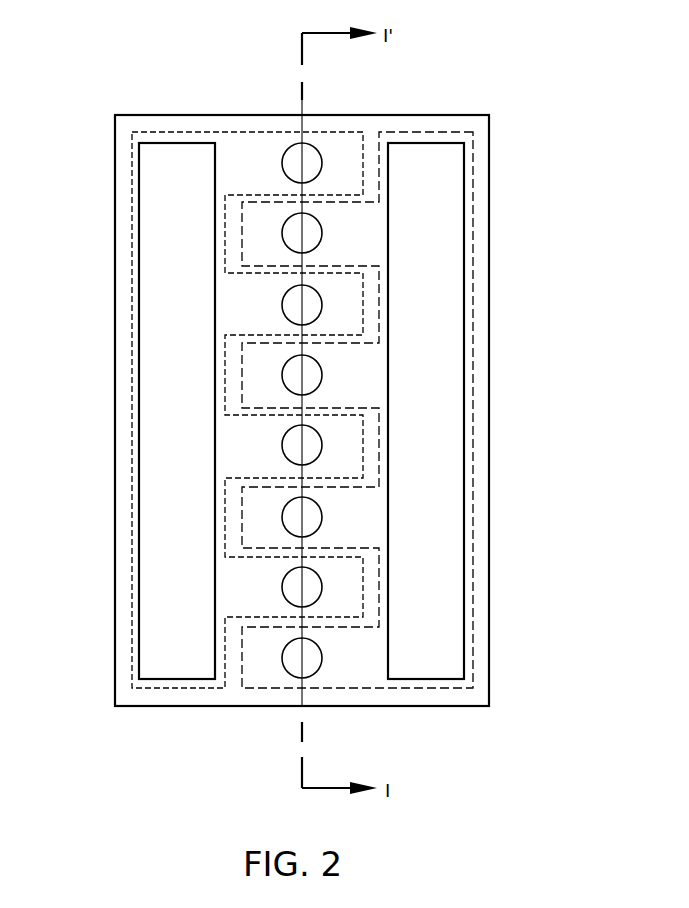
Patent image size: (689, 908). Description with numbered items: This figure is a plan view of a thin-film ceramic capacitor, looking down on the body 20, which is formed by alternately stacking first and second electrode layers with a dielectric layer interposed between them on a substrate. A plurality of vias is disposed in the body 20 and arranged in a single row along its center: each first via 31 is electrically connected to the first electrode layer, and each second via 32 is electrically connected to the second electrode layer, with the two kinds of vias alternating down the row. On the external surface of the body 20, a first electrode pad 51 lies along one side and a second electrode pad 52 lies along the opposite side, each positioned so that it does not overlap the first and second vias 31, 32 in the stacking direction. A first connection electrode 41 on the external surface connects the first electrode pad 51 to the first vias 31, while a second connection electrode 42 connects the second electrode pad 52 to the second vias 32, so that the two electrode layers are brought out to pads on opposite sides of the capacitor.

The body 20 is at (172, 707).
The first via 31 is at (282, 305).
The second via 32 is at (322, 375).
The first connection electrode 41 is at (139, 314).
The second connection electrode 42 is at (473, 380).
The first electrode pad 51 is at (132, 275).
The second electrode pad 52 is at (466, 341).